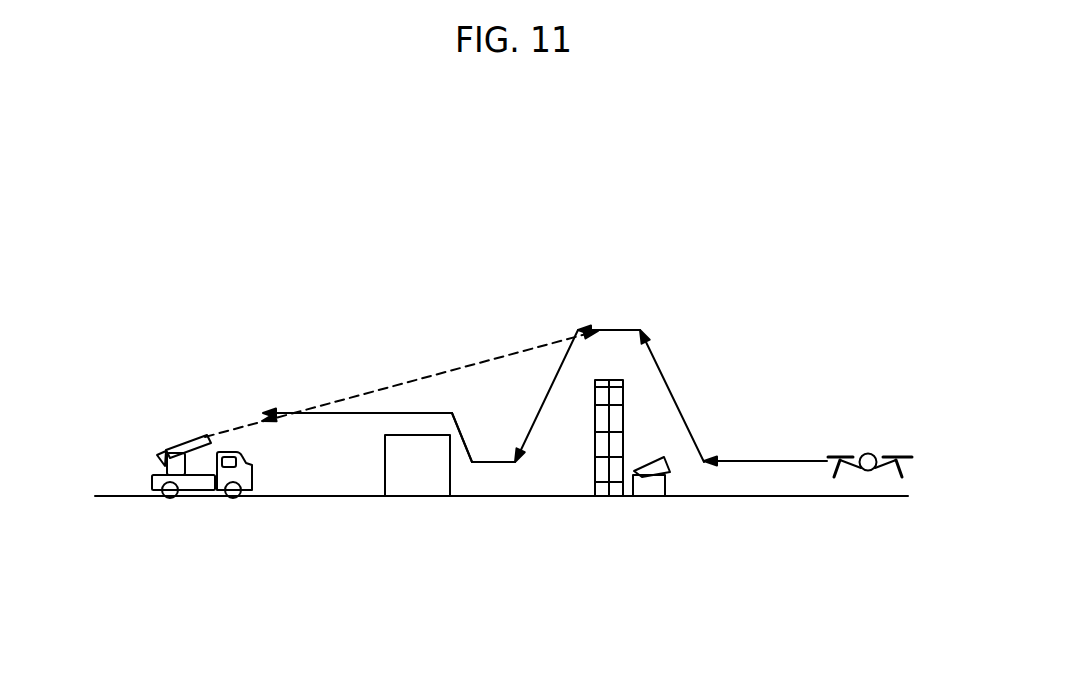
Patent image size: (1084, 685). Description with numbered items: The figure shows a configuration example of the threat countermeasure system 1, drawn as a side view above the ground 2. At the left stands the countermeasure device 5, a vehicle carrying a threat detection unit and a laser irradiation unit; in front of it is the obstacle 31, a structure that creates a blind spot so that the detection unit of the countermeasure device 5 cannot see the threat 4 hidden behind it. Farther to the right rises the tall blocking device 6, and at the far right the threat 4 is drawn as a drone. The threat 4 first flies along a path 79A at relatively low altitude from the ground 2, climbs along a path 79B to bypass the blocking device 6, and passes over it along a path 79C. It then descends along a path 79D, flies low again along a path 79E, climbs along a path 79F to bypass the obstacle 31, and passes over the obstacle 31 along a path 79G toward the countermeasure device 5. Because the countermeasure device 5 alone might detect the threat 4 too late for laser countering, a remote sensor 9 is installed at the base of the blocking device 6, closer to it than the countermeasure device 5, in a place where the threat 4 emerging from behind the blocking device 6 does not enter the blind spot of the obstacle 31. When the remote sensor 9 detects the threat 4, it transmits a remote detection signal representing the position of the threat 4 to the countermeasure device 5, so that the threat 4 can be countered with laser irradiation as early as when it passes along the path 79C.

The threat countermeasure system 1 is at (768, 155).
The ground 2 is at (858, 497).
The threat 4 is at (872, 452).
The countermeasure device 5 is at (166, 496).
The blocking device 6 is at (597, 493).
The remote sensor 9 is at (655, 492).
The obstacle 31 is at (402, 487).
The path 79A is at (795, 459).
The path 79B is at (670, 386).
The path 79C is at (612, 326).
The path 79D is at (546, 396).
The path 79E is at (495, 459).
The path 79F is at (457, 422).
The path 79G is at (293, 410).